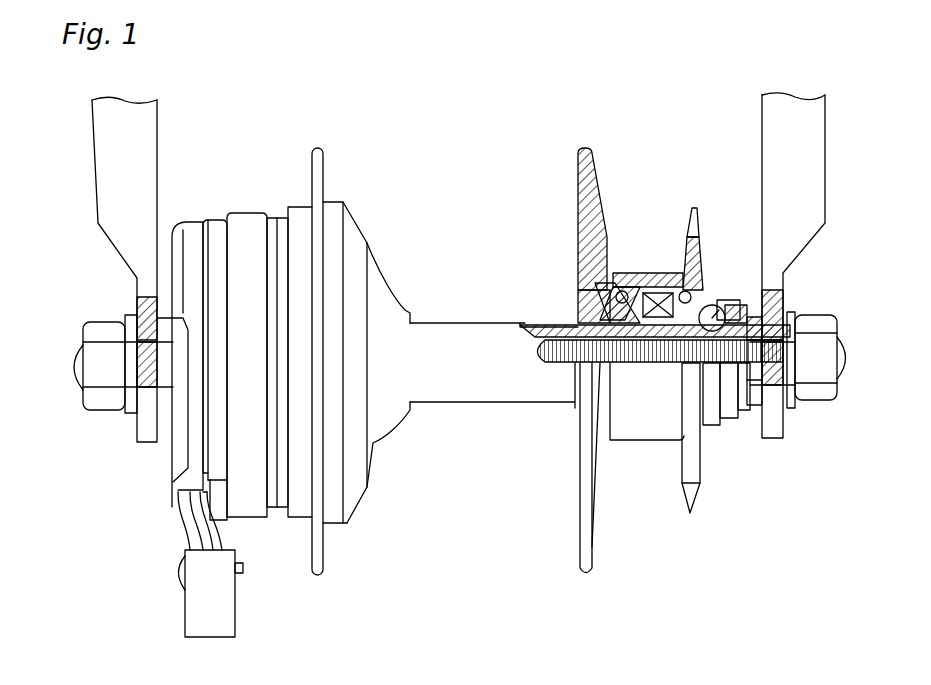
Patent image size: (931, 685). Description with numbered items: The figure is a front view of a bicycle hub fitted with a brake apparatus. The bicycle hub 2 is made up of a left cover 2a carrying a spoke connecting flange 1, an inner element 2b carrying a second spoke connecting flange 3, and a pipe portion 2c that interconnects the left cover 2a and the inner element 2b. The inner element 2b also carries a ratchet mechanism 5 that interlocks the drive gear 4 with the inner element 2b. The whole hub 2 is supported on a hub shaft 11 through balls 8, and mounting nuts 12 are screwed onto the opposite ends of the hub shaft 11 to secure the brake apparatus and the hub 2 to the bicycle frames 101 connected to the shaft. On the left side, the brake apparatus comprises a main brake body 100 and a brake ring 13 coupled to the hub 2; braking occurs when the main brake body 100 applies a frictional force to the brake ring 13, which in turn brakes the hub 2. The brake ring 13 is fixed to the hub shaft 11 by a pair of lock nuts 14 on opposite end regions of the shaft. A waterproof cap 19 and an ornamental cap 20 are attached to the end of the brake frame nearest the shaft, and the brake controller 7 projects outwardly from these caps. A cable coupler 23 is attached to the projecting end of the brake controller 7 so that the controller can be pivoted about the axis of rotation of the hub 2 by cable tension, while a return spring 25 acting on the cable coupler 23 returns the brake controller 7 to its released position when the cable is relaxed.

The spoke connecting flange 1 is at (320, 156).
The bicycle hub 2 is at (486, 362).
The left cover 2a is at (357, 238).
The inner element 2b is at (580, 298).
The pipe portion 2c is at (496, 395).
The spoke connecting flange 3 is at (578, 548).
The drive gear 4 is at (697, 210).
The ratchet mechanism 5 is at (650, 277).
The brake controller 7 is at (182, 525).
The balls 8 is at (716, 307).
The hub shaft 11 is at (548, 352).
The mounting nuts 12 is at (102, 400).
The brake ring 13 is at (282, 223).
The lock nuts 14 is at (167, 403).
The waterproof cap 19 is at (224, 218).
The ornamental cap 20 is at (177, 228).
The cable coupler 23 is at (224, 607).
The return spring 25 is at (217, 537).
The main brake body 100 is at (201, 210).
The bicycle frame 101 is at (118, 242).